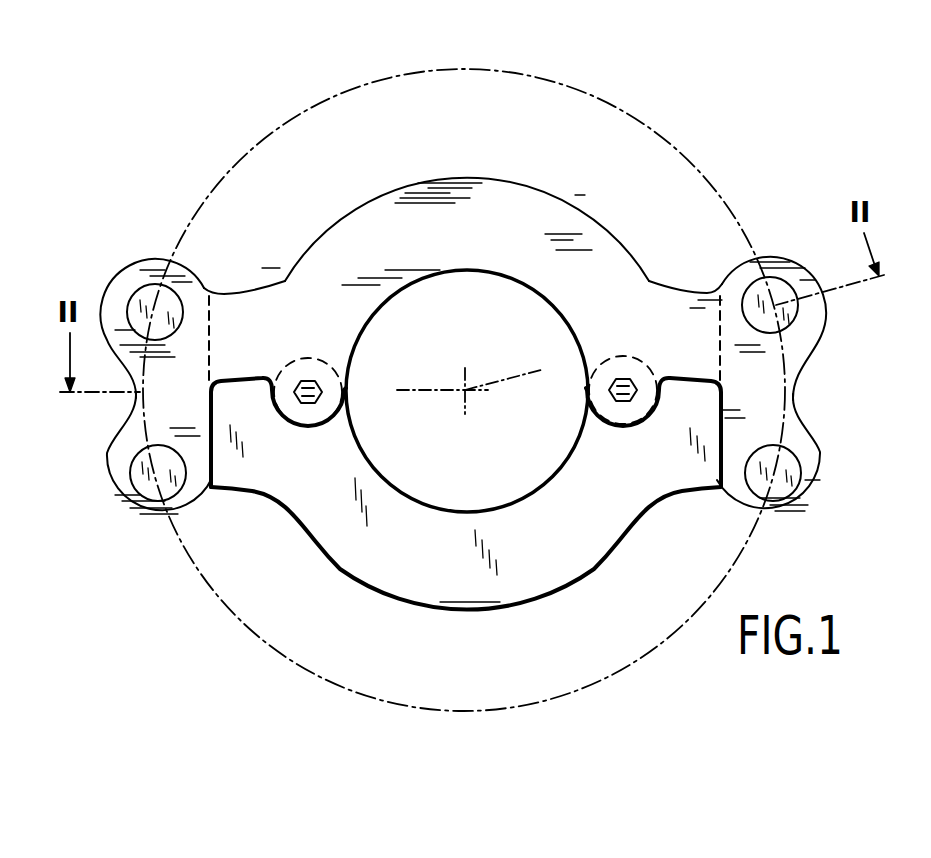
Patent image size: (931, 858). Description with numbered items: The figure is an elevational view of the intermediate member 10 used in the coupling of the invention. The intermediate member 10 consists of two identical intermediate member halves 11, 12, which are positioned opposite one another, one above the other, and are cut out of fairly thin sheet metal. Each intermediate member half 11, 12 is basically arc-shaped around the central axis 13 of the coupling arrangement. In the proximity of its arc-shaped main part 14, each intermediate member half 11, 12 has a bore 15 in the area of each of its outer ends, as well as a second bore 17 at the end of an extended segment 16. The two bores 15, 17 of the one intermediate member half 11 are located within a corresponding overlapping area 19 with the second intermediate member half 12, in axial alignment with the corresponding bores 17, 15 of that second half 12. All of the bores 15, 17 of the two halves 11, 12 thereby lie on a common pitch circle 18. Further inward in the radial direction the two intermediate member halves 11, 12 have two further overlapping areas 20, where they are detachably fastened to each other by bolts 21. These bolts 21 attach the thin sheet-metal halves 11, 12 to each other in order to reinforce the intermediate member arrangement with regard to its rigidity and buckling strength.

The intermediate member 10 is at (604, 202).
The intermediate member half 11 is at (598, 278).
The intermediate member half 12 is at (396, 547).
The central axis 13 is at (463, 397).
The arc-shaped main part 14 is at (433, 200).
The bore 15 is at (158, 305).
The extended segment 16 is at (137, 520).
The second bore 17 is at (143, 292).
The pitch circle 18 is at (493, 67).
The overlapping area 19 is at (162, 408).
The further overlapping area 20 is at (304, 418).
The bolt 21 is at (311, 378).